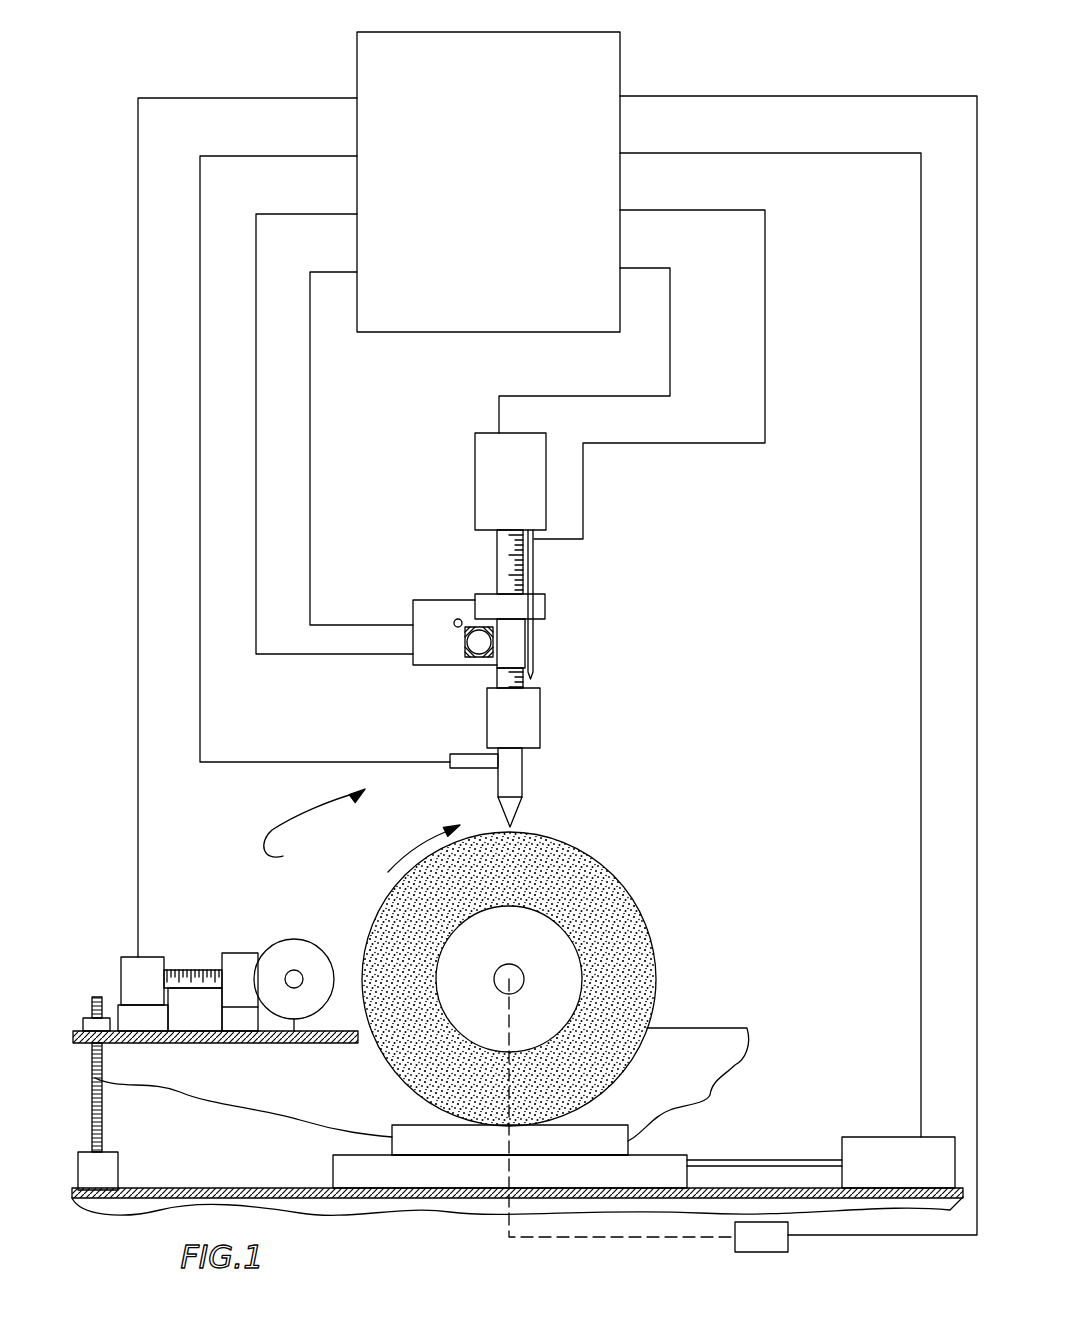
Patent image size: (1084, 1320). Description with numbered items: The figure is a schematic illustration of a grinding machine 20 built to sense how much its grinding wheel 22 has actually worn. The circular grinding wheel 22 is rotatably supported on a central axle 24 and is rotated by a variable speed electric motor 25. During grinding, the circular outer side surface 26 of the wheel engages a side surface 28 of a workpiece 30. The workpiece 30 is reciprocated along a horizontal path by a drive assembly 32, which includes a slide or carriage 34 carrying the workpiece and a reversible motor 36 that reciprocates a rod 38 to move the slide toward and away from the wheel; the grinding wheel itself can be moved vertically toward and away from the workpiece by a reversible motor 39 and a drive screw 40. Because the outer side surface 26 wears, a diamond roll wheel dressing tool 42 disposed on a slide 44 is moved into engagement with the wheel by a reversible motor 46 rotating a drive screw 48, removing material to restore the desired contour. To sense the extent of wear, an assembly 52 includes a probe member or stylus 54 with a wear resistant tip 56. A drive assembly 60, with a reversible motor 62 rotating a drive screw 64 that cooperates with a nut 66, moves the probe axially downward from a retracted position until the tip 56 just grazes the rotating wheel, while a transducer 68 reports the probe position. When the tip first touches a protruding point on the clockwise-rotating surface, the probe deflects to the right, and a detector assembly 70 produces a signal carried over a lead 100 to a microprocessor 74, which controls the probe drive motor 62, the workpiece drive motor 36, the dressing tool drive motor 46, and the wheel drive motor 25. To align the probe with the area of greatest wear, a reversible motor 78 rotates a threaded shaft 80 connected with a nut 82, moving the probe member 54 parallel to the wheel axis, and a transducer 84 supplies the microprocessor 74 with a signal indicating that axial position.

The grinding machine 20 is at (517, 1121).
The grinding wheel 22 is at (615, 860).
The central axle 24 is at (513, 982).
The variable speed electric motor 25 is at (758, 1238).
The circular outer side surface 26 is at (632, 893).
The side surface of the workpiece 28 is at (422, 1125).
The workpiece 30 is at (490, 1146).
The drive assembly 32 is at (946, 1119).
The slide or carriage 34 is at (580, 1177).
The reversible motor 36 is at (873, 1156).
The rod 38 is at (766, 1161).
The reversible motor 39 is at (120, 1152).
The drive screw 40 is at (102, 1068).
The diamond roll wheel dressing tool 42 is at (287, 940).
The slide 44 is at (238, 965).
The reversible motor 46 is at (152, 997).
The drive screw 48 is at (178, 972).
The assembly 52 is at (314, 828).
The probe member or stylus 54 is at (540, 778).
The wear resistant tip or point 56 is at (518, 826).
The drive assembly 60 is at (437, 468).
The reversible motor 62 is at (482, 507).
The drive screw 64 is at (500, 557).
The nut 66 is at (532, 663).
The transducer 68 is at (533, 578).
The detector assembly 70 is at (460, 754).
The microprocessor 74 is at (462, 187).
The reversible motor 78 is at (428, 665).
The threaded shaft 80 is at (477, 648).
The nut 82 is at (455, 645).
The transducer 84 is at (456, 619).
The lead 100 is at (240, 762).